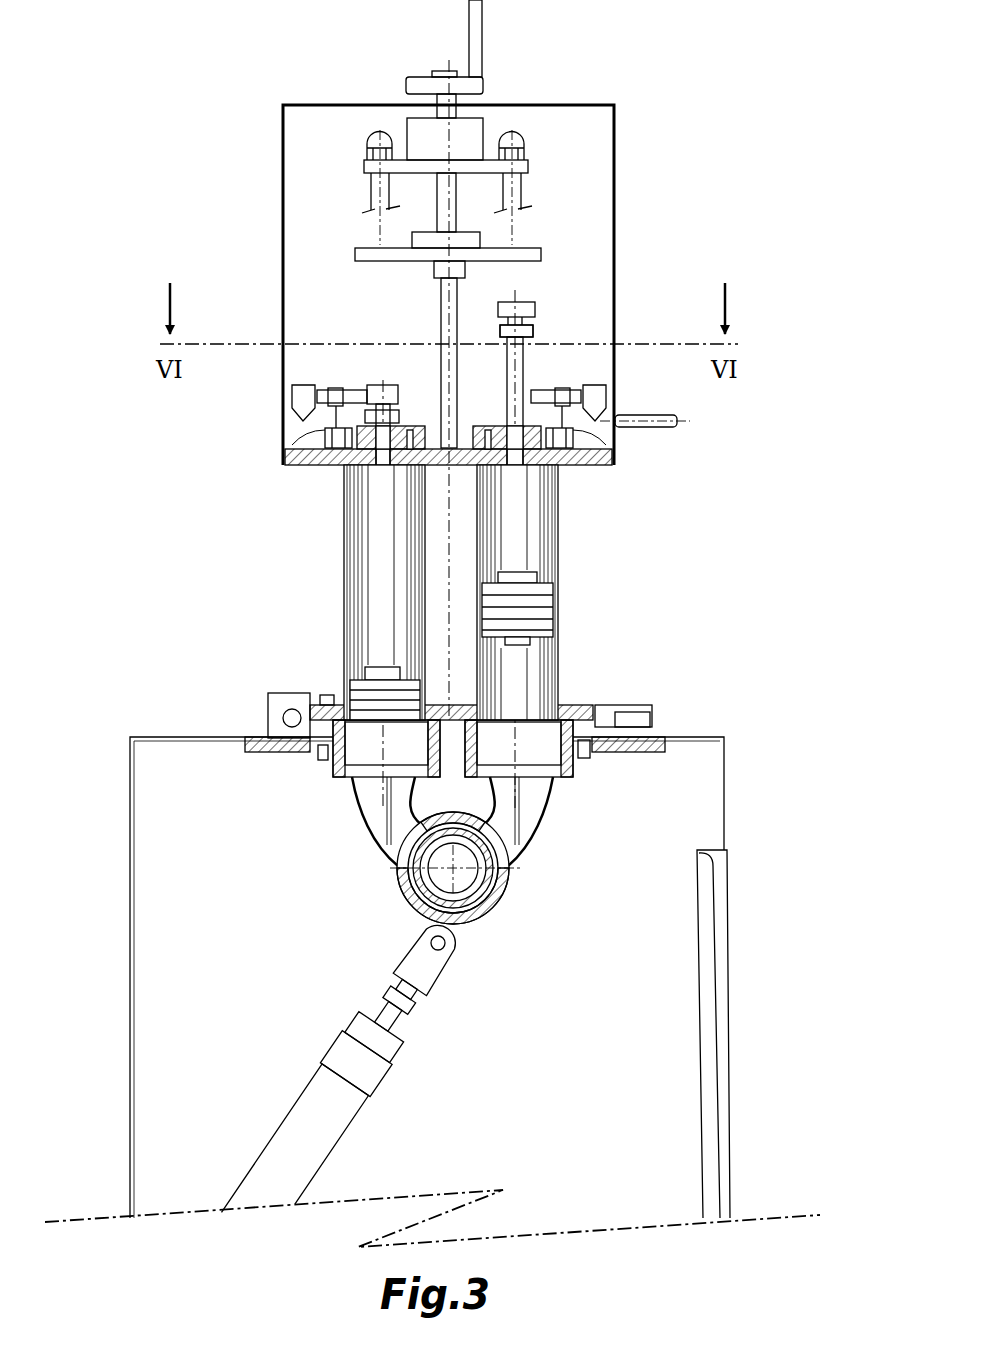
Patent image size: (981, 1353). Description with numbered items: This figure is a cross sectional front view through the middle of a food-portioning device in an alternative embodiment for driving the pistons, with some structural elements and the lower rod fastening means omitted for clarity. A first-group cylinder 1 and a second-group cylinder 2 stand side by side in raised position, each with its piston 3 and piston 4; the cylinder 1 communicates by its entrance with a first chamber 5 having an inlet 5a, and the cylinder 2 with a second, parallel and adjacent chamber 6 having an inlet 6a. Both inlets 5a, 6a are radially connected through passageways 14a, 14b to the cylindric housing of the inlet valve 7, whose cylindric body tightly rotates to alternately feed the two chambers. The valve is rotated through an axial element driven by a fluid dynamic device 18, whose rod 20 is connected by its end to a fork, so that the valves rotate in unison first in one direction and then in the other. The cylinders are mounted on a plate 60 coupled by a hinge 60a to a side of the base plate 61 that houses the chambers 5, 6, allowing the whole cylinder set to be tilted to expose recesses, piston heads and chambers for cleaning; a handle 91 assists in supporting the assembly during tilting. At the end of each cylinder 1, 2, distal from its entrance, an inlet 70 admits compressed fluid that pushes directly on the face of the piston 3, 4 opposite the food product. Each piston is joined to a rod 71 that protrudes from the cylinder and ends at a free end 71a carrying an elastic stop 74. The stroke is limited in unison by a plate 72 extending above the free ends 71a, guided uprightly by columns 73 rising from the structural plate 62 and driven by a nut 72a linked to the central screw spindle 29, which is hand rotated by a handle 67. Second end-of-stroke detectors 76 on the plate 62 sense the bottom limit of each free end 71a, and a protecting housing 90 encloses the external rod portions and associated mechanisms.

The cylinder 1 is at (347, 515).
The cylinder 2 is at (555, 680).
The piston 3 is at (355, 670).
The piston 4 is at (557, 605).
The first chamber 5 is at (345, 775).
The inlet of first chamber 5a is at (357, 800).
The second chamber 6 is at (565, 760).
The inlet of second chamber 6a is at (548, 800).
The inlet valve 7 is at (519, 908).
The passageway 14a is at (372, 840).
The passageway 14b is at (532, 823).
The fluid dynamic device 18 is at (350, 1105).
The rod 20 is at (415, 1015).
The screw spindle 29 is at (442, 310).
The plate 60 is at (595, 705).
The hinge 60a is at (290, 710).
The base plate 61 is at (322, 752).
The structural plate 62 is at (305, 470).
The handle 67 is at (482, 38).
The inlet of compressed fluid 70 is at (330, 435).
The rod 71 is at (508, 378).
The free end of rod 71a is at (378, 385).
The plate 72 is at (545, 252).
The nut 72a is at (433, 270).
The column 73 is at (530, 185).
The elastic stop 74 is at (535, 305).
The second detector of end of stroke 76 is at (292, 392).
The protecting housing 90 is at (326, 104).
The handle 91 is at (650, 428).